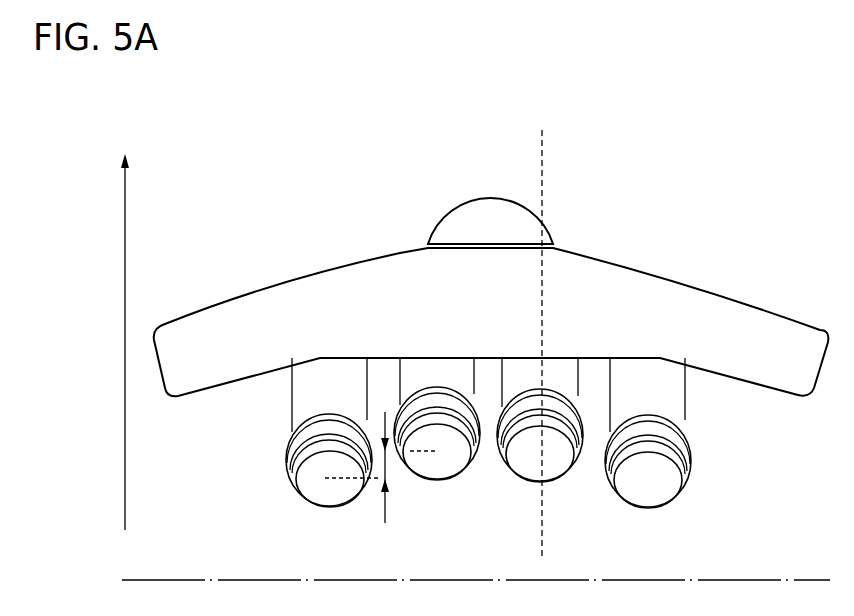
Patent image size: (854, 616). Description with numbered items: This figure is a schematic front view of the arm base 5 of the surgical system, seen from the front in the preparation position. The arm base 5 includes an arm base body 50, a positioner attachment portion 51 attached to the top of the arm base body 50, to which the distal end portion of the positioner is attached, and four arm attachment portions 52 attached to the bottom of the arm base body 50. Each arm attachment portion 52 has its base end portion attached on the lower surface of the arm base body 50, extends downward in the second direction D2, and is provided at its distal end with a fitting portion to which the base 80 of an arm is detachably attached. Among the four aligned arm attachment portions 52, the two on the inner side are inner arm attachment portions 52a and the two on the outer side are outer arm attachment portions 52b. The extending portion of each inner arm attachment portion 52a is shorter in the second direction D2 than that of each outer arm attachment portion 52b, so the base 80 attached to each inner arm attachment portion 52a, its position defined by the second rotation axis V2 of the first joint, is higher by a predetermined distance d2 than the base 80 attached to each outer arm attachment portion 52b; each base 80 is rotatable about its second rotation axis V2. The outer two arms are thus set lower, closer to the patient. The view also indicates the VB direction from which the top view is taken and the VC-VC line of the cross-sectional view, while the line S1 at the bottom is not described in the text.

The arm base 5 is at (658, 222).
The arm base body 50 is at (759, 310).
The positioner attachment portion 51 is at (455, 213).
The arm attachment portion 52 is at (499, 405).
The inner arm attachment portion 52a is at (440, 375).
The outer arm attachment portion 52b is at (328, 375).
The base 80 is at (306, 500).
The second rotation axis V2 is at (330, 480).
The VB direction VB is at (484, 138).
The VC-VC section line VC is at (548, 140).
The second direction D2 is at (126, 328).
The target surface S1 is at (782, 580).
The predetermined distance d2 is at (387, 472).